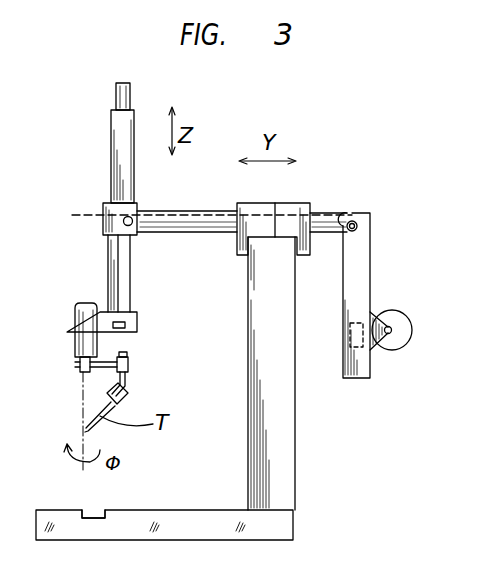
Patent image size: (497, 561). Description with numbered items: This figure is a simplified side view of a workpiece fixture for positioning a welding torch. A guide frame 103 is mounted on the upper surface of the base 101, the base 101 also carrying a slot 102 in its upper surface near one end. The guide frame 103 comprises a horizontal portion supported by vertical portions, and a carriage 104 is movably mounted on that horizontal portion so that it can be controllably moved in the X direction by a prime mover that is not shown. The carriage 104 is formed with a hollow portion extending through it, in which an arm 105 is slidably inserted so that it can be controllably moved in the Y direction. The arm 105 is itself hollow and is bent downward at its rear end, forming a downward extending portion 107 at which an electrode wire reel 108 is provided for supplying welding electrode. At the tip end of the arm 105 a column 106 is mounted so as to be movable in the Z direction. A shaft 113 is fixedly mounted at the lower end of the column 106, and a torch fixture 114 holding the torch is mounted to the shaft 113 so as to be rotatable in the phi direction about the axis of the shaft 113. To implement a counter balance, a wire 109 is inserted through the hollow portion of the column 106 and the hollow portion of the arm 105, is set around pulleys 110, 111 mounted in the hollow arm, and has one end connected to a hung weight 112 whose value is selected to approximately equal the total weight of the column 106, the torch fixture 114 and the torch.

The base 101 is at (293, 528).
The slot in base 102 is at (98, 511).
The guide frame 103 is at (287, 318).
The carriage 104 is at (240, 236).
The arm 105 is at (188, 229).
The column 106 is at (112, 158).
The downward extending portion 107 is at (365, 251).
The electrode wire reel 108 is at (397, 318).
The wire 109 is at (108, 257).
The pulley 110 is at (103, 210).
The pulley 111 is at (356, 222).
The weight 112 is at (345, 338).
The shaft 113 is at (81, 358).
The torch fixture 114 is at (134, 364).